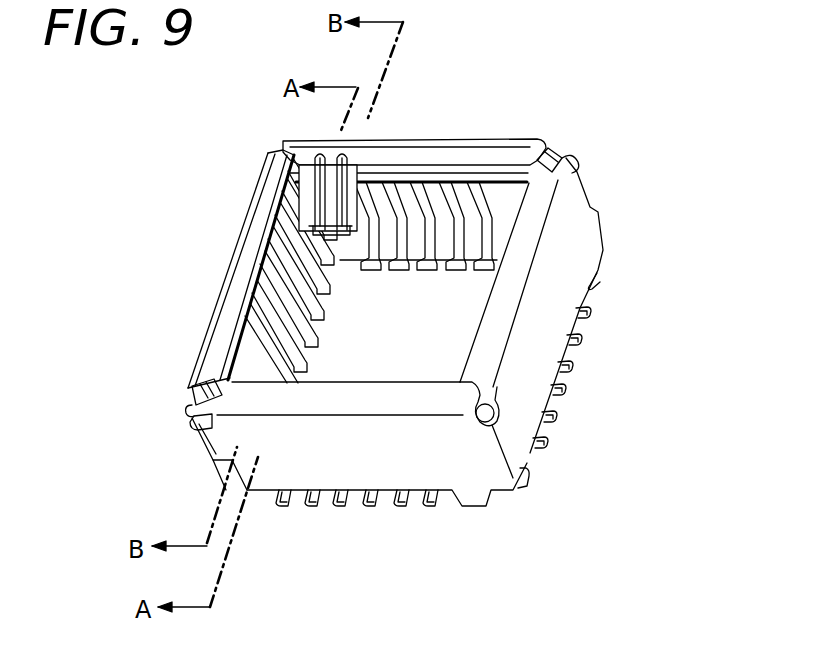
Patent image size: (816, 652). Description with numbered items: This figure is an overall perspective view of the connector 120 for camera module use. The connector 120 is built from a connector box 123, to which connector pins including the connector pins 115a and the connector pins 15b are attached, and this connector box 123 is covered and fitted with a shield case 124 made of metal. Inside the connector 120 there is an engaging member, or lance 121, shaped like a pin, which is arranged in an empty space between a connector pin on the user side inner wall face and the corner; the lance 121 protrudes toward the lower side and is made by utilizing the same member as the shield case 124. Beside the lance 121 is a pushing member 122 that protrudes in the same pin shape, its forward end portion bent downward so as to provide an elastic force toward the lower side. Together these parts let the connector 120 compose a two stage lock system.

The connector for camera module use 120 is at (494, 118).
The engaging member (lance) 121 is at (333, 207).
The pushing member 122 is at (345, 207).
The connector box 123 is at (250, 272).
The shield case 124 is at (568, 250).
The contacts 15b is at (440, 270).
The connector pins 115a is at (566, 392).